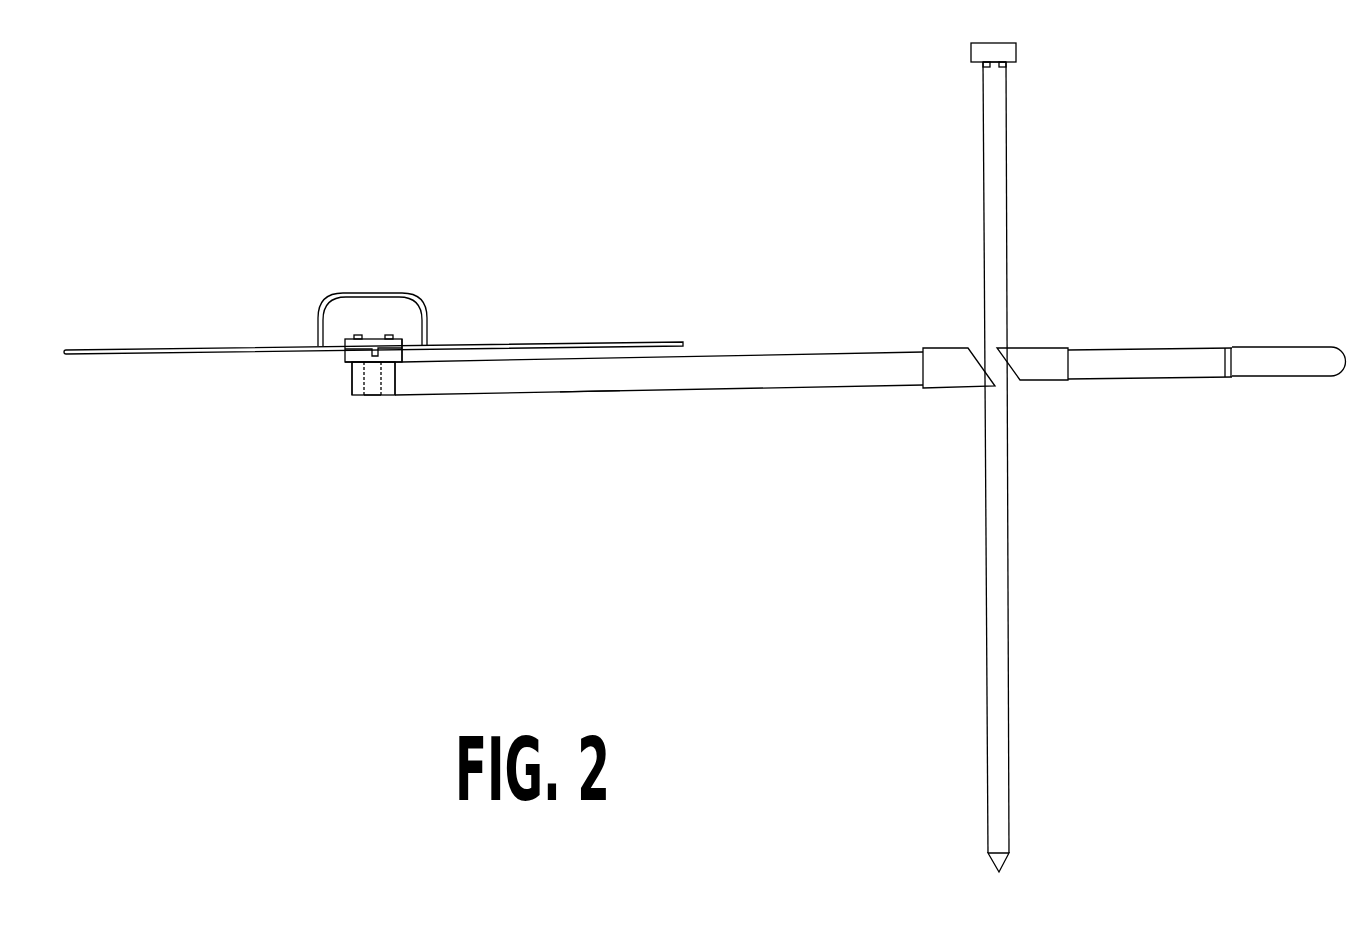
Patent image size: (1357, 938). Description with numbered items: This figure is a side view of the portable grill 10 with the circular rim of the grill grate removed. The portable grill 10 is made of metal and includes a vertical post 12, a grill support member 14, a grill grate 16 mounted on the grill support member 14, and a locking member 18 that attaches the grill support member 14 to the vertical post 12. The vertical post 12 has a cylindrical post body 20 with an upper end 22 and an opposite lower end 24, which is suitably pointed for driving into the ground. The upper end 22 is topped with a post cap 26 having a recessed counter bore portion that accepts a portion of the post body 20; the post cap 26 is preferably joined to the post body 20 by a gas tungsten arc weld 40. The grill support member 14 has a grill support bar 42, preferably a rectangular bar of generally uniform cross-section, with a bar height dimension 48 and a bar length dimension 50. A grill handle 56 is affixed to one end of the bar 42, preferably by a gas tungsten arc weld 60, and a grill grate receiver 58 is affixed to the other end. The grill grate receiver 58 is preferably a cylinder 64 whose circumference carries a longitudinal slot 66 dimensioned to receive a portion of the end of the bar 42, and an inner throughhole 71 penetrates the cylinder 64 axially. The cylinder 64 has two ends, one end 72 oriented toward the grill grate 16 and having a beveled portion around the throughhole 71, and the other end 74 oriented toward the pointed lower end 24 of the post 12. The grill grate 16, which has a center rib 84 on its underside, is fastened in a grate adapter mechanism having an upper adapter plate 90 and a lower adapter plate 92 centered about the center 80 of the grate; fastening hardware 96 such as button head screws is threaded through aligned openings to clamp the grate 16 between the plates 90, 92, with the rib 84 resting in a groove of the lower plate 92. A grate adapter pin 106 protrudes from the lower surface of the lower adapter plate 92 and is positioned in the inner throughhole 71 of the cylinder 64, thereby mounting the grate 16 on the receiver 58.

The portable grill 10 is at (1045, 182).
The vertical post 12 is at (1031, 471).
The grill support member 14 is at (659, 377).
The grill grate 16 is at (636, 342).
The locking member 18 is at (1028, 348).
The cylindrical post body 20 is at (1007, 232).
The upper end 22 is at (1012, 63).
The lower end 24 is at (1001, 871).
The post cap 26 is at (1016, 52).
The gas tungsten arc weld 40 is at (982, 67).
The grill support bar 42 is at (833, 388).
The bar height dimension 48 is at (745, 373).
The bar length dimension 50 is at (590, 390).
The grill handle 56 is at (1207, 328).
The grill grate receiver 58 is at (392, 396).
The gas tungsten arc weld 60 is at (1225, 348).
The cylinder 64 is at (351, 382).
The longitudinal slot 66 is at (371, 424).
The inner throughhole 71 is at (371, 397).
The end of cylinder 72 is at (360, 362).
The end of cylinder 74 is at (362, 396).
The center of grill grate 80 is at (373, 341).
The center rib 84 is at (374, 309).
The upper adapter plate 90 is at (362, 345).
The lower adapter plate 92 is at (405, 350).
The fastening hardware 96 is at (357, 335).
The grate adapter pin 106 is at (378, 397).